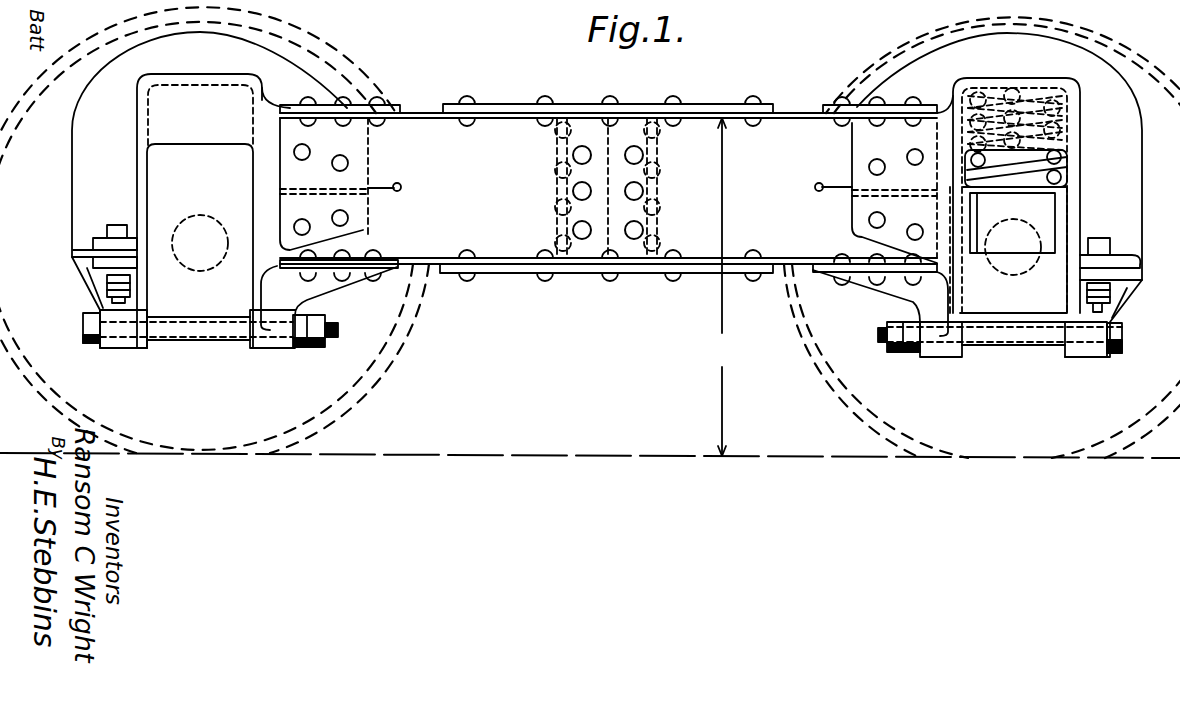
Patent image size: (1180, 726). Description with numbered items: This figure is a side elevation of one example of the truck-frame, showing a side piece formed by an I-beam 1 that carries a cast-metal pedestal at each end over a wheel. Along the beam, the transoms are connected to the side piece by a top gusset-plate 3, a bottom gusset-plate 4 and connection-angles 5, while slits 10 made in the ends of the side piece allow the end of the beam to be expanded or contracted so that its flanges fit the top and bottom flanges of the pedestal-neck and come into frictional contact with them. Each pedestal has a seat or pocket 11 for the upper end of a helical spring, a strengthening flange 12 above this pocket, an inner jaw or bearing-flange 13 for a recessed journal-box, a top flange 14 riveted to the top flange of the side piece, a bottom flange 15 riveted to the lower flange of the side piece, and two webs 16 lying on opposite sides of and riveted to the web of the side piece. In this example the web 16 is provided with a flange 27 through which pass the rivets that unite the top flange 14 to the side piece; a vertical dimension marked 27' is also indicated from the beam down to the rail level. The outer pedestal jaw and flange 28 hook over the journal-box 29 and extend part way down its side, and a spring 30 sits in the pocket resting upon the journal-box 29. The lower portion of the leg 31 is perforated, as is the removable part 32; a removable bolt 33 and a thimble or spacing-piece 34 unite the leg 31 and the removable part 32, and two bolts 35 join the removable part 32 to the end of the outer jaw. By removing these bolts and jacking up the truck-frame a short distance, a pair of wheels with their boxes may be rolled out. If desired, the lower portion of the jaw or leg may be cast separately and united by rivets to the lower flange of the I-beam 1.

The I-beam 1 is at (780, 267).
The top gusset-plate 3 is at (710, 103).
The bottom gusset-plate 4 is at (618, 277).
The connection-angle 5 is at (635, 253).
The slit 10 is at (396, 191).
The seat or pocket 11 is at (190, 122).
The strengthening flange 12 is at (608, 197).
The inner jaw or bearing-flange 13 is at (247, 192).
The top flange 14 is at (387, 110).
The bottom flange 15 is at (400, 273).
The web 16 is at (608, 190).
The flange 27 is at (612, 139).
The height dimension 27' is at (716, 287).
The outer pedestal jaw and flange 28 is at (607, 194).
The journal-box 29 is at (1013, 250).
The spring 30 is at (1064, 168).
The leg 31 is at (935, 357).
The removable part 32 is at (88, 293).
The removable bolt 33 is at (326, 340).
The thimble or spacing-piece 34 is at (210, 341).
The bolt 35 is at (107, 240).